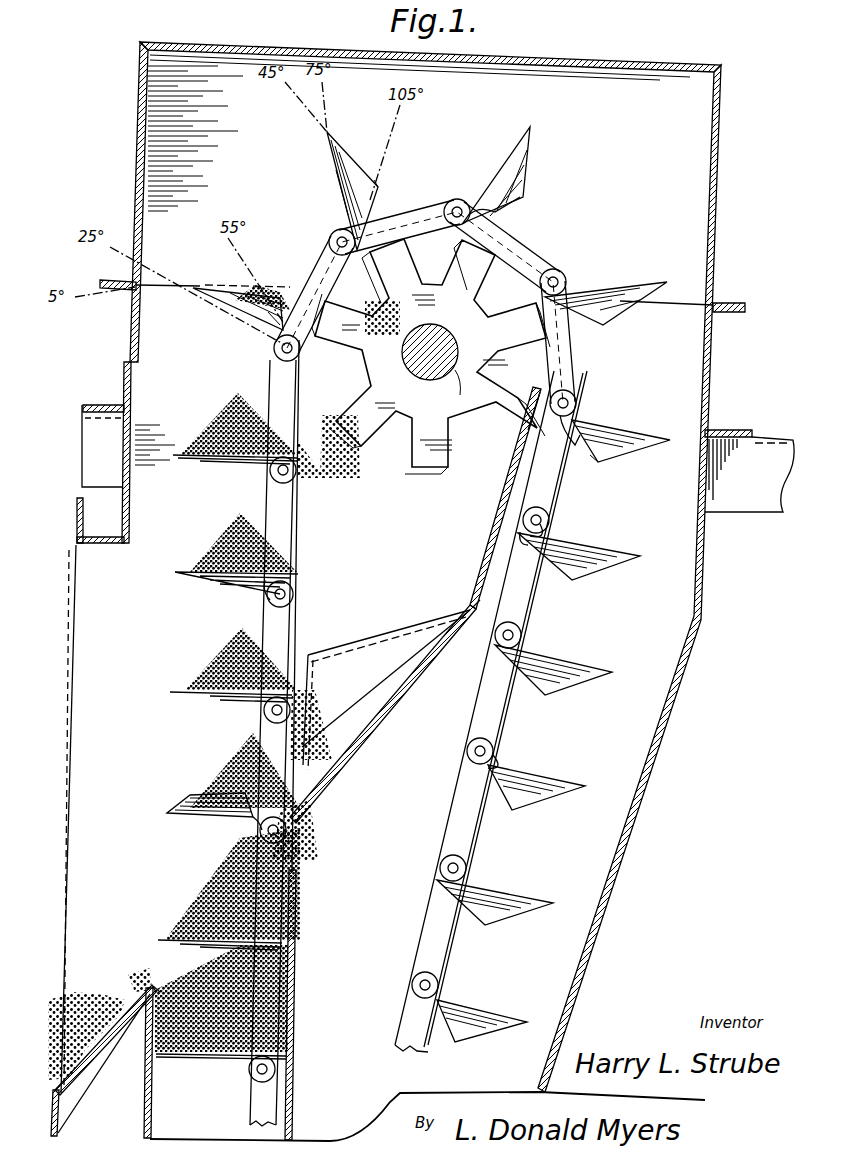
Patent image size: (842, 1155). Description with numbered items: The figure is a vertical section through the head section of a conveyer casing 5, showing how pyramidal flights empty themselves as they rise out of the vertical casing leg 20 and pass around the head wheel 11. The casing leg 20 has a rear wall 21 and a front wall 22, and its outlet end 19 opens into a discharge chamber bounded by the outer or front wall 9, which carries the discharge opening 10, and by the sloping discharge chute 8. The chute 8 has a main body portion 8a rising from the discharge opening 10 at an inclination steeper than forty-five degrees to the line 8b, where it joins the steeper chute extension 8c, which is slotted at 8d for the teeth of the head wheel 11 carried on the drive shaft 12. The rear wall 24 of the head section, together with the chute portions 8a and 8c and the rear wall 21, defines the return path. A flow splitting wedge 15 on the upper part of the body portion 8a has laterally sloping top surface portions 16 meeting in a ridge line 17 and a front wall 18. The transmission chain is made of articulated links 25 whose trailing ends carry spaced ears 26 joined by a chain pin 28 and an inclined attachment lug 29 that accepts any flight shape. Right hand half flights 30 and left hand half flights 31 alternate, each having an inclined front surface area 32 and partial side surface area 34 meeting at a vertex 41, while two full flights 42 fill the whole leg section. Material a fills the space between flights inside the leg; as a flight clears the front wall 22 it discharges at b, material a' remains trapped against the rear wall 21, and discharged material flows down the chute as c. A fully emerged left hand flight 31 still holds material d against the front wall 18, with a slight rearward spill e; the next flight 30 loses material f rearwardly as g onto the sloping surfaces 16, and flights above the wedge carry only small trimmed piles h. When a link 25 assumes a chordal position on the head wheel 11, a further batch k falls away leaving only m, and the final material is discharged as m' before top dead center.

The head section of a conveyer casing 5 is at (650, 800).
The sloping discharge chute 8 is at (108, 1042).
The main body portion of the discharge chute 8a is at (347, 762).
The line where chute portions join 8b is at (470, 605).
The chute extension 8c is at (498, 545).
The slot 8d is at (520, 505).
The outer or front wall 9 is at (137, 364).
The discharge opening 10 is at (72, 769).
The head wheel 11 is at (435, 382).
The drive shaft 12 is at (450, 330).
The flow splitting wedge 15 is at (377, 719).
The laterally sloping top surface portions 16 is at (386, 678).
The ridge line 17 is at (360, 650).
The front wall of the flow splitting wedge 18 is at (308, 655).
The outlet end of the vertical casing leg 19 is at (152, 985).
The vertical casing leg 20 is at (138, 1131).
The rear wall of the casing leg 21 is at (290, 1068).
The front wall of the casing leg 22 is at (143, 1100).
The rear wall of the casing head section 24 is at (670, 693).
The articulated links 25 is at (412, 210).
The spaced ears 26 is at (465, 200).
The chain pin 28 is at (456, 205).
The attachment lug 29 is at (580, 430).
The right hand half flight 30 is at (329, 132).
The left hand half flight 31 is at (530, 127).
The front surface area 32 is at (335, 180).
The partial side surface area 34 is at (524, 196).
The vertex 41 is at (380, 186).
The full flight 42 is at (640, 557).
The material a is at (235, 998).
The material a' is at (244, 884).
The discharging material b is at (128, 975).
The material flowing down the chute c is at (50, 1025).
The material held by left hand flight d is at (220, 762).
The slight rearward discharge e is at (320, 815).
The material supported by half flight f is at (218, 658).
The rearwardly discharged material g is at (312, 705).
The material remaining on flights h is at (215, 415).
The additional batch of discharged material k is at (330, 458).
The small remaining material m is at (246, 282).
The final discharge m' is at (401, 311).